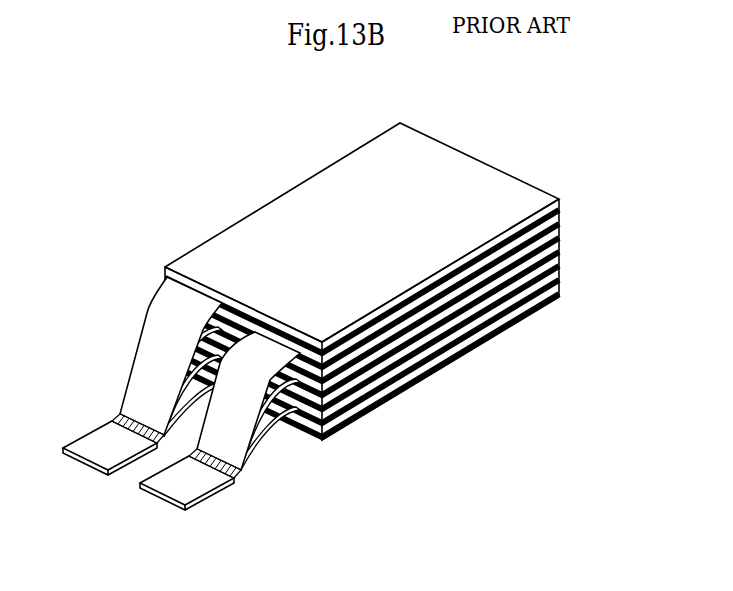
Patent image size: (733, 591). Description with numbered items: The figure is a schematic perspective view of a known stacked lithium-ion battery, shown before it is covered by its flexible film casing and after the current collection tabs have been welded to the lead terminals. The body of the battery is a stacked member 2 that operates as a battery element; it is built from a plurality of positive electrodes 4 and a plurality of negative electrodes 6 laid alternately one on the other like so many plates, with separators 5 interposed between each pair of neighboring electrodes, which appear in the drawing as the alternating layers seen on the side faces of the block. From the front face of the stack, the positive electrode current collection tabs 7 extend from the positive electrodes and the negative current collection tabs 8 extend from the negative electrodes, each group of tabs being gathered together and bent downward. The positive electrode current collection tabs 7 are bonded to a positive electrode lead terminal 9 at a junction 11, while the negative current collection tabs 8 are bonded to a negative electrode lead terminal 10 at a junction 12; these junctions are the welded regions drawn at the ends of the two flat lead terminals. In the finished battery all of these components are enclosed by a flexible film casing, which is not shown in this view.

The stacked member 2 is at (490, 157).
The positive electrode 4 is at (562, 222).
The separator 5 is at (560, 212).
The negative electrode 6 is at (560, 200).
The positive electrode current collection tab 7 is at (240, 423).
The negative current collection tab 8 is at (147, 358).
The positive electrode lead terminal 9 is at (175, 488).
The negative electrode lead terminal 10 is at (95, 453).
The junction 11 is at (232, 480).
The junction 12 is at (112, 421).